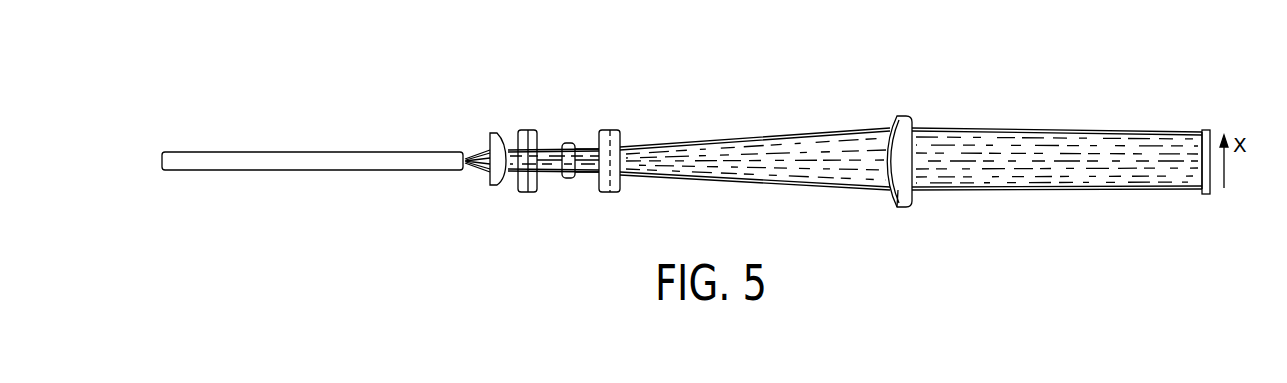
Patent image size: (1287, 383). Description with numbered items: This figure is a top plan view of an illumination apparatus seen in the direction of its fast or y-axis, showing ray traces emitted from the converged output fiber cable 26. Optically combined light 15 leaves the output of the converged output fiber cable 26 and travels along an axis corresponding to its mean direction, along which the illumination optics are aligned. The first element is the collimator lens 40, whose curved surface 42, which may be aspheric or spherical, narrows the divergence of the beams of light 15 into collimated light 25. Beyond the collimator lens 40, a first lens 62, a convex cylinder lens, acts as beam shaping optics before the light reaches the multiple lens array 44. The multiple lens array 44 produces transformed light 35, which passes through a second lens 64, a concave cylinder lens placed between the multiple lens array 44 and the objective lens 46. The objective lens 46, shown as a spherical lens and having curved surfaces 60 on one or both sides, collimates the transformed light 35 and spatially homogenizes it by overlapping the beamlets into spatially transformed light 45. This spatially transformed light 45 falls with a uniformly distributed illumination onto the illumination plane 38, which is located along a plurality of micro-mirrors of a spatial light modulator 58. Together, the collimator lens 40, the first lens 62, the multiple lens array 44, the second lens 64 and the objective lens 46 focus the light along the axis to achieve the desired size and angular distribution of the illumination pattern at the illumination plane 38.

The converged output fiber cable 26 is at (322, 153).
The collimator lens 40 is at (490, 148).
The optically combined light 15 is at (474, 167).
The curved surface 42 is at (493, 133).
The collimated light 25 is at (515, 172).
The first lens 62 is at (530, 130).
The multiple lens array 44 is at (568, 143).
The transformed light 35 is at (593, 173).
The second lens 64 is at (612, 130).
The spatially transformed light 45 is at (1068, 128).
The objective lens 46 is at (905, 116).
The curved surfaces 60 is at (894, 205).
The spatial light modulator 58 is at (1203, 130).
The illumination plane 38 is at (1202, 132).